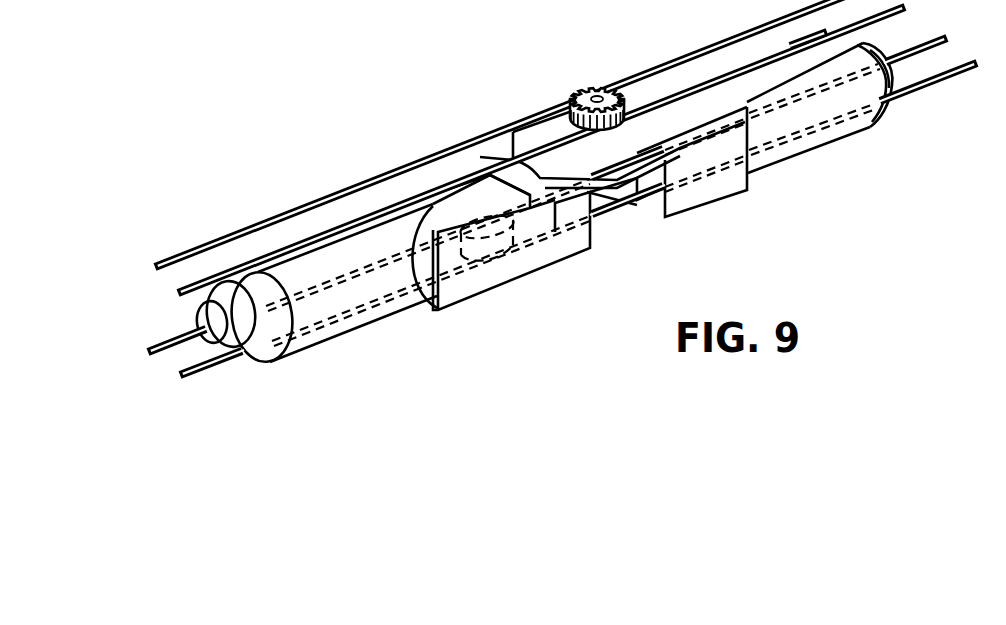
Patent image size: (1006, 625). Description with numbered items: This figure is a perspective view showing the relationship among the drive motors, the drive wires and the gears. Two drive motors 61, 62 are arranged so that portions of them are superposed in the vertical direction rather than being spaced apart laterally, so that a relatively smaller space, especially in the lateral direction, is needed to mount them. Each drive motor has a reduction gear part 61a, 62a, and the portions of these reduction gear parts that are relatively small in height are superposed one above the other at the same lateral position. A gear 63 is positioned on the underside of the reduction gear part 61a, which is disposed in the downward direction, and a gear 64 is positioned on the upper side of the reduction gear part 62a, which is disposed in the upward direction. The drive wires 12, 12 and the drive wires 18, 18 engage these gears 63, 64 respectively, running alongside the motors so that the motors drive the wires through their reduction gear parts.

The drive wire 12 is at (150, 356).
The drive wire 18 is at (212, 268).
The drive motor 61 is at (355, 323).
The reduction gear part 61a is at (468, 286).
The drive motor 62 is at (817, 143).
The reduction gear part 62a is at (713, 198).
The gear 63 is at (505, 255).
The gear 64 is at (596, 86).